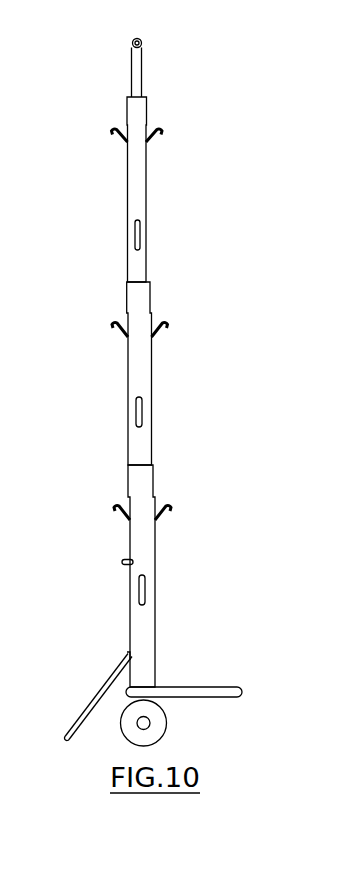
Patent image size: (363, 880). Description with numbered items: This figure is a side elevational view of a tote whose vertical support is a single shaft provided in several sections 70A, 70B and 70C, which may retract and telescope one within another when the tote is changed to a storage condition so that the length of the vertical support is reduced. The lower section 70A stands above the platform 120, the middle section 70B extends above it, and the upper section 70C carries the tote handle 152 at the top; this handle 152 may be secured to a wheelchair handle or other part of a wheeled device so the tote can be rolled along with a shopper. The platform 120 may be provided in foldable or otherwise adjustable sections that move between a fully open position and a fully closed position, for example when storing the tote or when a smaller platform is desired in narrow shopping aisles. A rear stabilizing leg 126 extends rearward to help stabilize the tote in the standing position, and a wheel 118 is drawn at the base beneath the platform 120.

The tote handle 152 is at (142, 43).
The shaft section 70C is at (147, 188).
The shaft section 70B is at (152, 371).
The shaft section 70A is at (155, 563).
The platform 120 is at (222, 687).
The wheel 118 is at (167, 718).
The rear stabilizing leg 126 is at (83, 712).